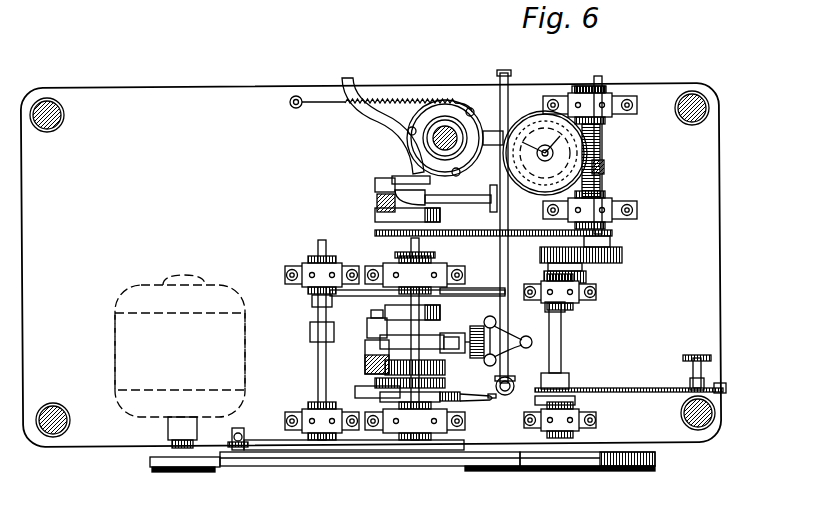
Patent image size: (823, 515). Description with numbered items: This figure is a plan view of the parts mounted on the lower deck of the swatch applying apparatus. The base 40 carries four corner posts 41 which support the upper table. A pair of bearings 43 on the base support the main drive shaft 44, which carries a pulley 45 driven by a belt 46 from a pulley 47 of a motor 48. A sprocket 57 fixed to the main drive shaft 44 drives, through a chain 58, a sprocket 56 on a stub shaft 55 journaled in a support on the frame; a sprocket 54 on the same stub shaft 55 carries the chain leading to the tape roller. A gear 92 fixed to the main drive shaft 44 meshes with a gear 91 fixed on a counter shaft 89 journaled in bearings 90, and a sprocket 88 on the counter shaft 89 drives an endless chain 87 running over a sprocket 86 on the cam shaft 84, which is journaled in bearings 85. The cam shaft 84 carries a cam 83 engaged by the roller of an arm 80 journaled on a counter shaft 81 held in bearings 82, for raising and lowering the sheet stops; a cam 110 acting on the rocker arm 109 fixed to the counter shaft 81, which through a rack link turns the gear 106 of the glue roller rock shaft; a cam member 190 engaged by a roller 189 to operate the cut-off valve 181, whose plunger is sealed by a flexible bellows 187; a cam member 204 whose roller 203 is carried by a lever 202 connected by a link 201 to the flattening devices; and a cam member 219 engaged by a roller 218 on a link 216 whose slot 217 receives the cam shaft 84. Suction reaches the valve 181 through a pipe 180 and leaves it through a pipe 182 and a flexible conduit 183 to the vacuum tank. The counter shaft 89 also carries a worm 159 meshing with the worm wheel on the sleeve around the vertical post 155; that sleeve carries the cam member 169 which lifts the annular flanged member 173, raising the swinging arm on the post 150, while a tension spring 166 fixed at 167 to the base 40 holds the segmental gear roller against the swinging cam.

The base 40 is at (238, 88).
The corner posts 41 is at (716, 92).
The bearings 43 is at (580, 304).
The main drive shaft 44 is at (562, 342).
The pulley 45 is at (640, 468).
The belt 46 is at (362, 462).
The pulley 47 is at (172, 470).
The motor 48 is at (145, 290).
The sprocket 54 is at (696, 355).
The stub shaft 55 is at (720, 378).
The sprocket 56 is at (724, 395).
The sprocket 57 is at (570, 388).
The chain 58 is at (634, 388).
The arm 80 is at (366, 344).
The counter shaft 81 is at (318, 322).
The bearings 82 is at (322, 266).
The cam 83 is at (372, 386).
The cam shaft 84 is at (432, 256).
The bearings 85 is at (402, 272).
The sprocket 86 is at (410, 246).
The endless chain 87 is at (493, 232).
The sprocket 88 is at (612, 240).
The counter shaft 89 is at (606, 138).
The bearings 90 is at (598, 92).
The gear 91 is at (624, 256).
The gear 92 is at (548, 264).
The gear 106 is at (242, 430).
The rocker arm 109 is at (300, 462).
The cam 110 is at (450, 304).
The post 150 is at (445, 130).
The vertical post 155 is at (545, 145).
The worm 159 is at (606, 162).
The tension spring 166 is at (388, 100).
The fixing point 167 is at (294, 95).
The cam member 169 is at (576, 90).
The annular flanged member 173 is at (412, 128).
The pipe 180 is at (508, 76).
The cut-off valve 181 is at (524, 334).
The pipe 182 is at (478, 200).
The flexible conduit 183 is at (364, 131).
The flexible bellows 187 is at (470, 324).
The roller 189 is at (446, 340).
The cam member 190 is at (476, 354).
The link 201 is at (398, 176).
The lever 202 is at (376, 184).
The roller 203 is at (377, 206).
The cam member 204 is at (385, 218).
The link 216 is at (503, 394).
The slot 217 is at (478, 398).
The roller 218 is at (386, 386).
The cam member 219 is at (450, 390).